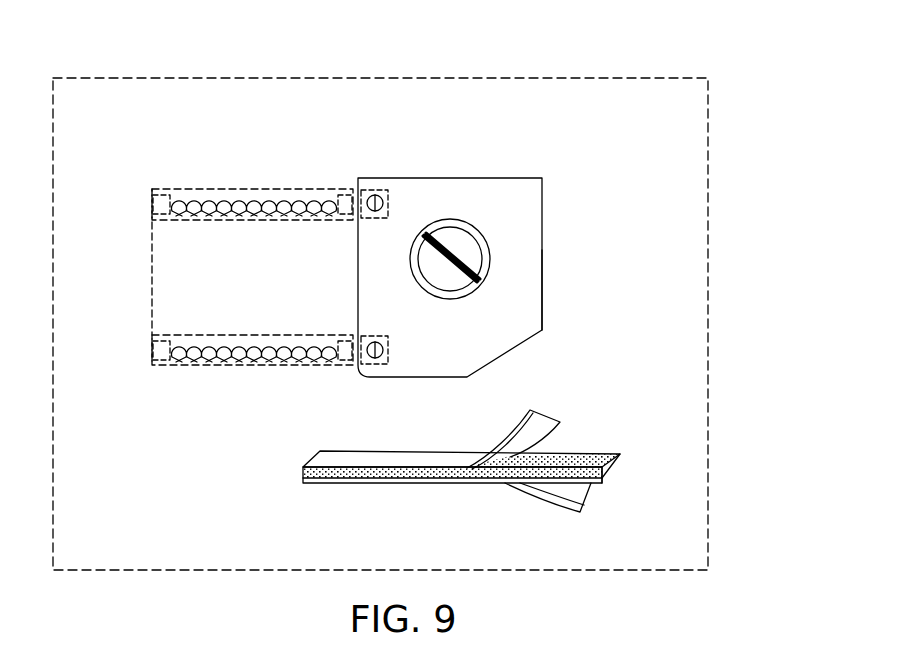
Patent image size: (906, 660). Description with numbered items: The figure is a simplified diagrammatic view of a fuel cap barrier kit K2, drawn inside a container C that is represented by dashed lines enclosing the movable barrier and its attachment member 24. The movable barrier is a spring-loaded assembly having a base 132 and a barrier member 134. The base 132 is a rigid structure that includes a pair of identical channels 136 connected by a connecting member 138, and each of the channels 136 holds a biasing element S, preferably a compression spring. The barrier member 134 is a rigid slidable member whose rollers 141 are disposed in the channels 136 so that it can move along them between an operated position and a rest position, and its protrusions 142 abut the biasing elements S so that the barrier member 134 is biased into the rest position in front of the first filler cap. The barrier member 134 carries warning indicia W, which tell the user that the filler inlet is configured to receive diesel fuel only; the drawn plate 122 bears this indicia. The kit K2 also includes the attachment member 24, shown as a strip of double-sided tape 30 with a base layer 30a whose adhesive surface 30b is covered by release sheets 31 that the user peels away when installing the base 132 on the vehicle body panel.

The container C is at (109, 77).
The kit K2 is at (750, 148).
The connecting member 138 is at (152, 304).
The base 132 is at (205, 189).
The channels 136 is at (258, 190).
The biasing element S is at (239, 222).
The warning plate 122 is at (492, 156).
The warning indicia W is at (512, 252).
The barrier member 134 is at (543, 292).
The protrusions 142 is at (352, 190).
The rollers 141 is at (378, 212).
The attachment member 24 is at (466, 456).
The double-sided tape 30 is at (390, 474).
The base layer 30a is at (618, 460).
The adhesive surface 30b is at (580, 458).
The release sheet 31 is at (543, 415).